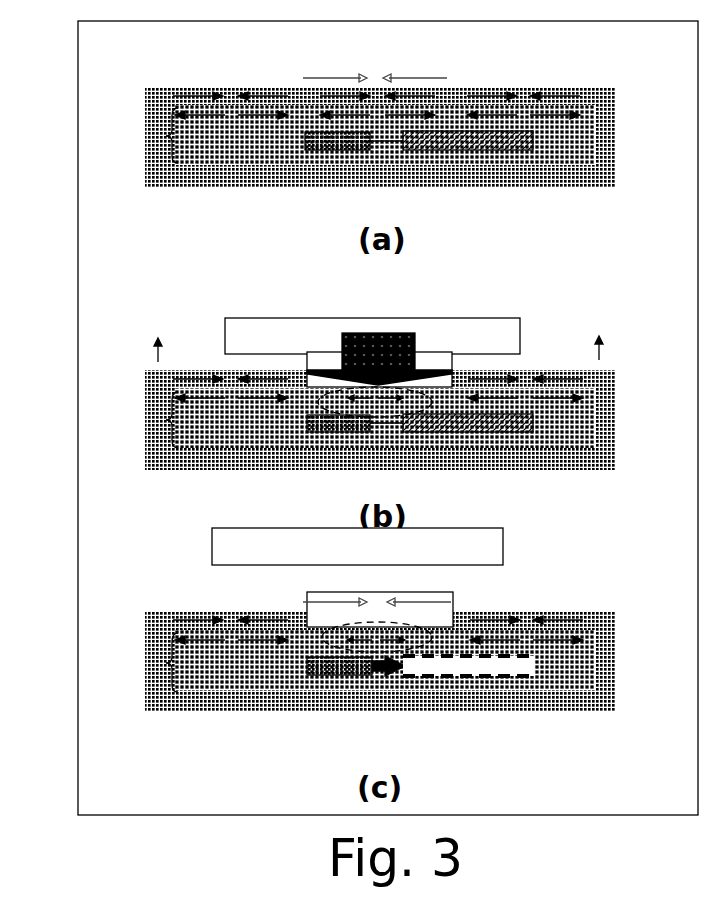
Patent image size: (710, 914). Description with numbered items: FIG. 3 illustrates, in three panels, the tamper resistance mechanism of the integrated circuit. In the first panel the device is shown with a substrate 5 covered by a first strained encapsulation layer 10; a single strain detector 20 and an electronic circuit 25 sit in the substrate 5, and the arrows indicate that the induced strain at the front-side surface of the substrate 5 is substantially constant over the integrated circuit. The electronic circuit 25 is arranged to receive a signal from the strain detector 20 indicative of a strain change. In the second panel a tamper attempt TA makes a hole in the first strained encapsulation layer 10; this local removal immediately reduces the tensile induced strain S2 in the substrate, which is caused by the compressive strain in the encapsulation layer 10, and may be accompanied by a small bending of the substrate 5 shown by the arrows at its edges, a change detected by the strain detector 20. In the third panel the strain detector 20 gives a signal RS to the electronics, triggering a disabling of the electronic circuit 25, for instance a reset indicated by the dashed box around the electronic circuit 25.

The substrate 5 is at (166, 136).
The first strained encapsulation layer 10 is at (222, 96).
The strain detector 20 is at (340, 146).
The electronic circuit 25 is at (503, 142).
The induced strain S2 is at (423, 392).
The tamper attempt TA is at (378, 336).
The signal RS is at (380, 672).